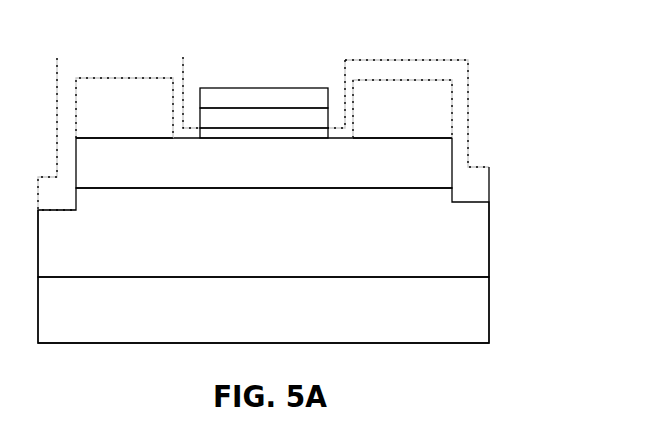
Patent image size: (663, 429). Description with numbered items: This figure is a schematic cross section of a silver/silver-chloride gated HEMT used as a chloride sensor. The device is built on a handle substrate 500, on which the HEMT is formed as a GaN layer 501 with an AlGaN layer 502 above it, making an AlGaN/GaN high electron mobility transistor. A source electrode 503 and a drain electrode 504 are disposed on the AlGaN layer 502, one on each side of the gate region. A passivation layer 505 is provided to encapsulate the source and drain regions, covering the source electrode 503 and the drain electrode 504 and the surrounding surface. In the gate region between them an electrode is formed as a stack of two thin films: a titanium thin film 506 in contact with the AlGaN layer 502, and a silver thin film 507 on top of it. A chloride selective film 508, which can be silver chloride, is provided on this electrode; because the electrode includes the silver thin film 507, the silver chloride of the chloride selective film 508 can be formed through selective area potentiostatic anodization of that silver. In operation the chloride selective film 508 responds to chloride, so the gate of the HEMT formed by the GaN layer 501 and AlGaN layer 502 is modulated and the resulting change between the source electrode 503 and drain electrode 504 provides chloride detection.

The handle substrate 500 is at (475, 315).
The GaN layer 501 is at (475, 247).
The AlGaN layer 502 is at (433, 175).
The source electrode 503 is at (167, 95).
The drain electrode 504 is at (440, 126).
The passivation layer 505 is at (457, 150).
The titanium thin film 506 is at (317, 133).
The silver thin film 507 is at (247, 120).
The chloride selective film 508 is at (317, 97).